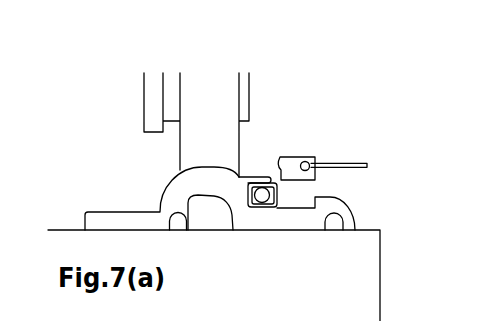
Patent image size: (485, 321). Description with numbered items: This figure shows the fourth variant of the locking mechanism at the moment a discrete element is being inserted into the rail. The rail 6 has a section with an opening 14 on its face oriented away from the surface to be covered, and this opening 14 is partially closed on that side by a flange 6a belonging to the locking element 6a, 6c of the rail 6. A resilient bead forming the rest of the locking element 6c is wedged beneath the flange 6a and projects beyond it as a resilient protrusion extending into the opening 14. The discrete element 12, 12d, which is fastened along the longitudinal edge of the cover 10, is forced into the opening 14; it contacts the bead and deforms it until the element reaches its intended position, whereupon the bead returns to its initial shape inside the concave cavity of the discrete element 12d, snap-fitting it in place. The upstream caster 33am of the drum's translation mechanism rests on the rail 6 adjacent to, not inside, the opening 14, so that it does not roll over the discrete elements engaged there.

The upstream caster 33am is at (210, 85).
The rail 6 is at (290, 229).
The flange 6a is at (250, 178).
The locking element 6c is at (267, 196).
The discrete element 12 is at (312, 164).
The discrete element 12d is at (295, 157).
The cover 10 is at (368, 163).
The opening 14 is at (298, 203).